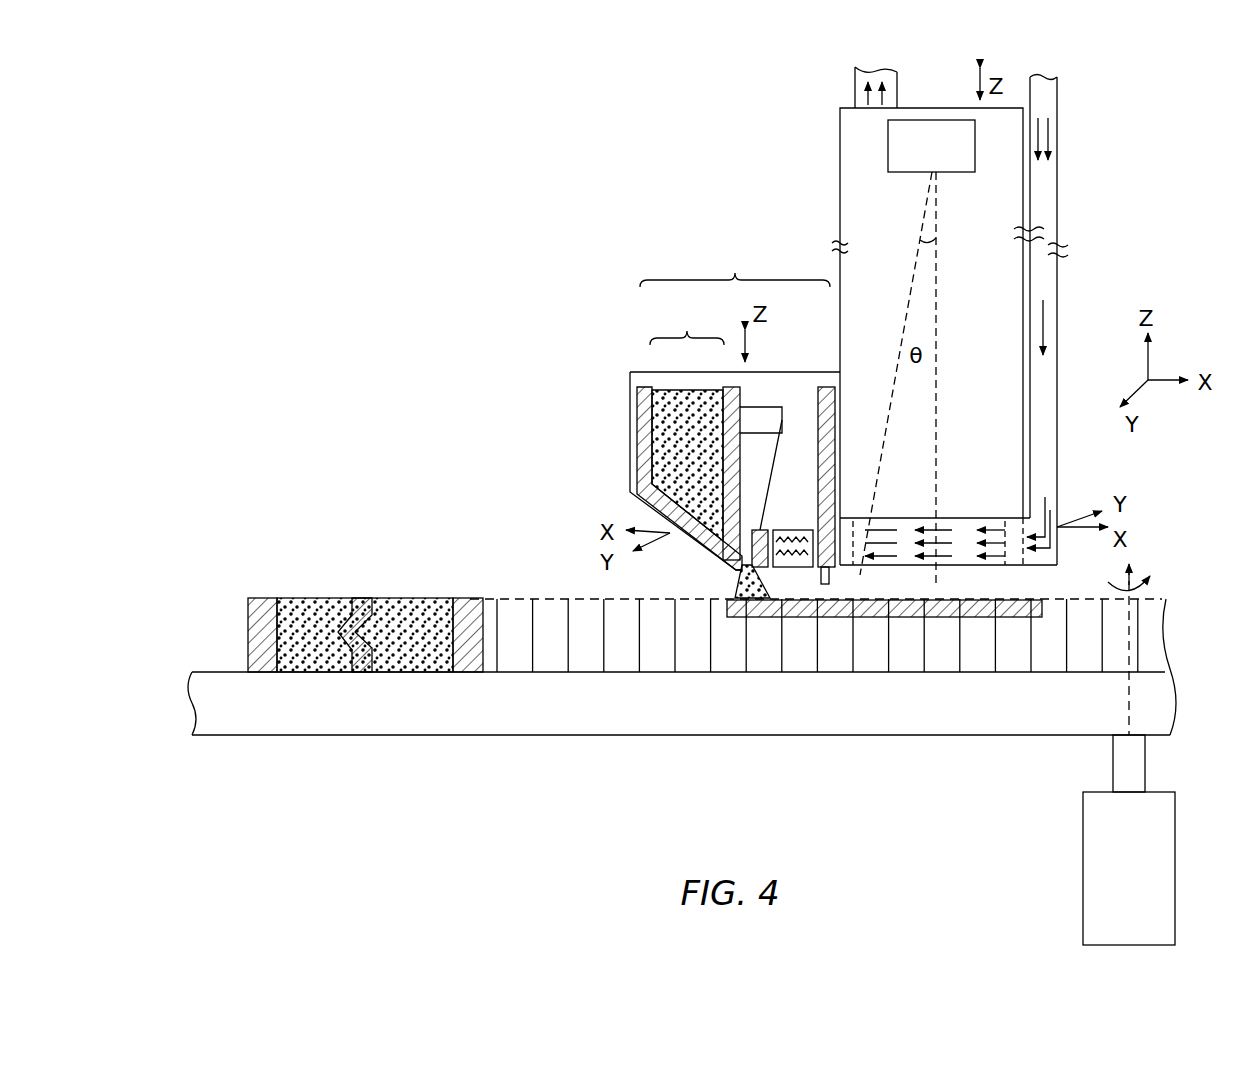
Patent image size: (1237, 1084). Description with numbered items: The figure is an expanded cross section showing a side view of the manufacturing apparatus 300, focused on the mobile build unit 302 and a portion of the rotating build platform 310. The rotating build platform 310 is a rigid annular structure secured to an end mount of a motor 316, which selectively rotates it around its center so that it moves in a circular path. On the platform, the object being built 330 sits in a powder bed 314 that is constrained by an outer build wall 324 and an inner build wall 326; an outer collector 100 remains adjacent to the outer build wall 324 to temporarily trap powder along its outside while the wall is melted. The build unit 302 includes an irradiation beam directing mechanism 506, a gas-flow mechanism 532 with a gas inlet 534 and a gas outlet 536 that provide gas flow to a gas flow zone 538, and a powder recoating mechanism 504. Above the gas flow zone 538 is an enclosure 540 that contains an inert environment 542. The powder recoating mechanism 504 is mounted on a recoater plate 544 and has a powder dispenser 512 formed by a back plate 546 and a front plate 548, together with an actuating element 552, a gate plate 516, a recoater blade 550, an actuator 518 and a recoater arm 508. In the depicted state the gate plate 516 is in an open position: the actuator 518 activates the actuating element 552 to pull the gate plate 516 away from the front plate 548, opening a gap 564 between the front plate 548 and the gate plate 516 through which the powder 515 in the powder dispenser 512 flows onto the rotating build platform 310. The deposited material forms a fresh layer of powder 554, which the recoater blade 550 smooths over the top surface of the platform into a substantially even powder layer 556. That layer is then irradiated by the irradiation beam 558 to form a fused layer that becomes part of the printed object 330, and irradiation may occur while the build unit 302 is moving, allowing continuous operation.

The manufacturing apparatus 300 is at (560, 198).
The build unit 302 is at (800, 102).
The outer collector 100 is at (938, 610).
The rotating build platform 310 is at (375, 716).
The powder bed 314 is at (425, 600).
The motor 316 is at (1158, 876).
The outer build wall 324 is at (258, 602).
The inner build wall 326 is at (472, 600).
The printed object 330 is at (365, 600).
The powder recoating mechanism 504 is at (735, 260).
The irradiation beam directing mechanism 506 is at (923, 143).
The recoater arm 508 is at (822, 385).
The powder dispenser 512 is at (687, 415).
The powder 515 is at (720, 427).
The gate plate 516 is at (757, 533).
The actuator 518 is at (787, 567).
The gas-flow mechanism 532 is at (1040, 200).
The gas inlet 534 is at (1015, 530).
The gas outlet 536 is at (852, 517).
The gas flow zone 538 is at (960, 530).
The enclosure 540 is at (838, 170).
The inert environment 542 is at (862, 212).
The recoater plate 544 is at (628, 418).
The back plate 546 is at (643, 385).
The front plate 548 is at (735, 398).
The recoater blade 550 is at (823, 567).
The actuating element 552 is at (777, 447).
The fresh layer of powder 554 is at (728, 584).
The substantially even powder layer 556 is at (1004, 600).
The irradiation beam 558 is at (938, 330).
The gap 564 is at (745, 570).